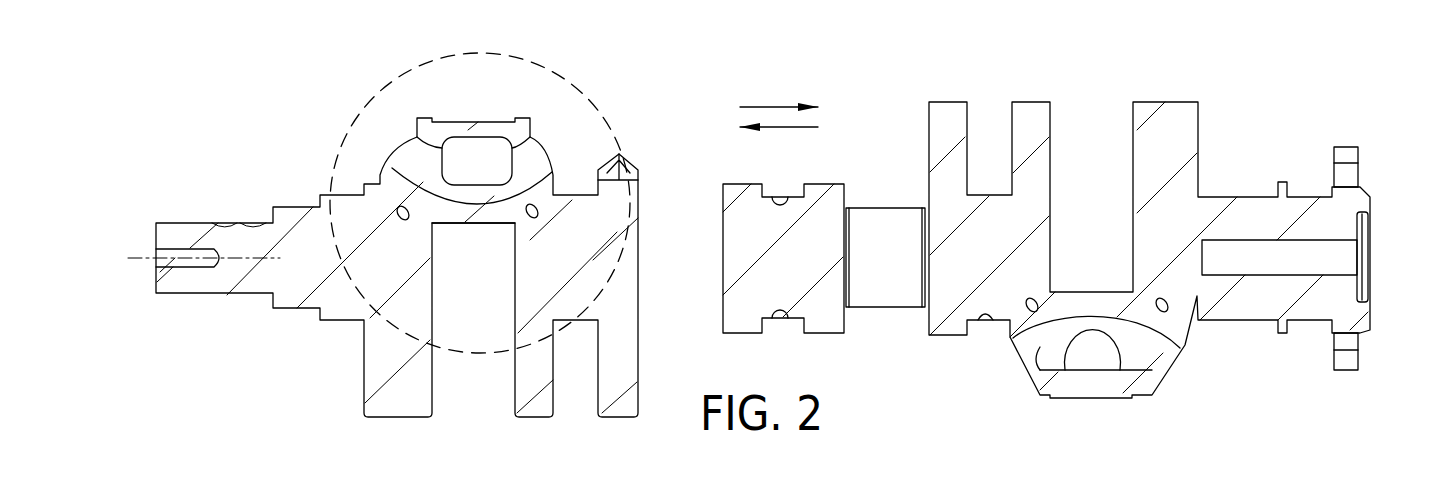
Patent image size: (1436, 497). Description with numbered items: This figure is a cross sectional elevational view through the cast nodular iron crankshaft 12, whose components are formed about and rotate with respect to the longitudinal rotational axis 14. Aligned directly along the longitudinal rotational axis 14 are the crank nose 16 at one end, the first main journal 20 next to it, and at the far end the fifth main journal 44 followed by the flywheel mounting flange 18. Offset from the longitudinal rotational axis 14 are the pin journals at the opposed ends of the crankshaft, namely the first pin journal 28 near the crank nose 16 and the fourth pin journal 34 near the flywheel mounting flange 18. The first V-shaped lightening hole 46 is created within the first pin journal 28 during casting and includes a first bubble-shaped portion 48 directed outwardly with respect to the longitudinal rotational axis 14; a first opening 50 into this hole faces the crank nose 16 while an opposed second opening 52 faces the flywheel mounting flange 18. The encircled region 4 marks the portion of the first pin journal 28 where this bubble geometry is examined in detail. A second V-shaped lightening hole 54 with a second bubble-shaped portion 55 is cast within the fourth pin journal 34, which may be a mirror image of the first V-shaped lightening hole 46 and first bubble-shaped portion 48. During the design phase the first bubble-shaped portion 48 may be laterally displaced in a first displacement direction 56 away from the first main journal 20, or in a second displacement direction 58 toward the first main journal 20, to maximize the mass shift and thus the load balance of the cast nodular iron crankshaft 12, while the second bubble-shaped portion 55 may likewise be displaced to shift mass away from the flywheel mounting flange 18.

The detail view indicator (FIG. 4) 4 is at (370, 102).
The cast nodular iron crankshaft 12 is at (302, 287).
The longitudinal rotational axis 14 is at (137, 258).
The crank nose 16 is at (200, 283).
The flywheel mounting flange 18 is at (1345, 152).
The first main journal 20 is at (347, 207).
The first pin journal 28 is at (468, 130).
The fourth pin journal 34 is at (1093, 383).
The rear main journal 44 is at (1237, 210).
The first V-shaped lightening hole 46 is at (493, 202).
The first bubble-shaped portion 48 is at (493, 147).
The first opening 50 is at (412, 150).
The second opening 52 is at (532, 160).
The second V-shaped lightening hole 54 is at (1137, 357).
The second bubble-shaped portion 55 is at (1102, 357).
The first displacement direction 56 is at (772, 107).
The second displacement direction 58 is at (790, 127).